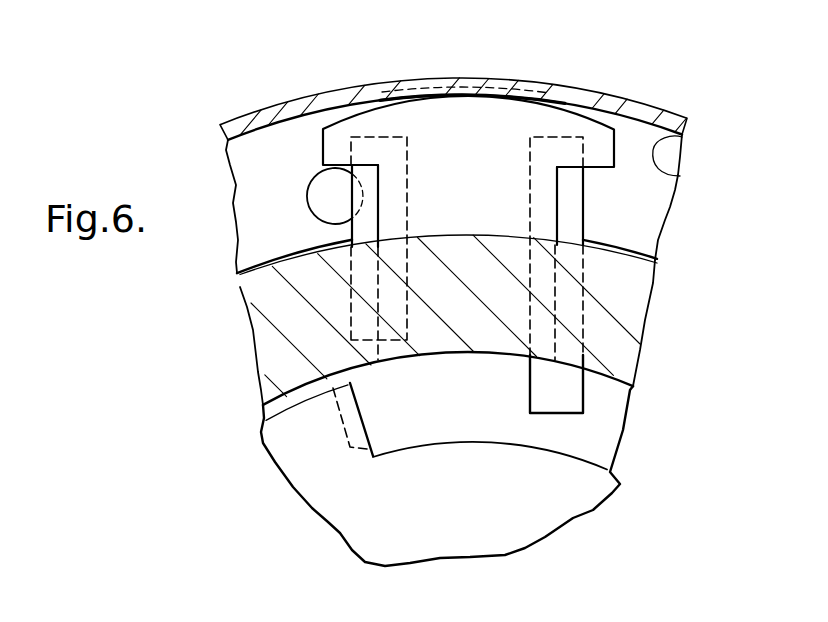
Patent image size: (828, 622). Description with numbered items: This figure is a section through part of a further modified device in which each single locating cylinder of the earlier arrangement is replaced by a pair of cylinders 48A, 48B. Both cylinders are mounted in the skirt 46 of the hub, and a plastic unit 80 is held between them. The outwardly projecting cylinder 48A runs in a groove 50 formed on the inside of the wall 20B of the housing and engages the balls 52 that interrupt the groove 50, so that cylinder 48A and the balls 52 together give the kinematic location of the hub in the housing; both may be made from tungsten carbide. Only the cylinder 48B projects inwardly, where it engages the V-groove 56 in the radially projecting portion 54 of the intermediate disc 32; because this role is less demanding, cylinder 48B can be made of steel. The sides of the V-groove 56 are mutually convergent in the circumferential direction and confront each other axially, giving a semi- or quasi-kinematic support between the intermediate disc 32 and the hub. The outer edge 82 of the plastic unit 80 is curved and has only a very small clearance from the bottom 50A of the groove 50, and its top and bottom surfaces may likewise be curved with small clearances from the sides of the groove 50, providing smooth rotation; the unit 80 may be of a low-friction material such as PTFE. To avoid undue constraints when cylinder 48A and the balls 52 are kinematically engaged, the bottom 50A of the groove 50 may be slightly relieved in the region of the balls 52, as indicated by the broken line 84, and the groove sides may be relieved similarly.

The wall of the housing 20B is at (660, 113).
The plastic unit 80 is at (487, 117).
The outer edge of the plastic unit 82 is at (596, 93).
The broken line 84 is at (541, 93).
The groove 50 is at (647, 215).
The bottom of the groove 50A is at (680, 175).
The balls 52 is at (320, 195).
The cylinder 48A is at (409, 190).
The cylinder 48B is at (530, 395).
The skirt of the hub 46 is at (613, 330).
The radially projecting portion 54 is at (278, 418).
The V-groove 56 is at (363, 413).
The intermediate disc 32 is at (563, 508).